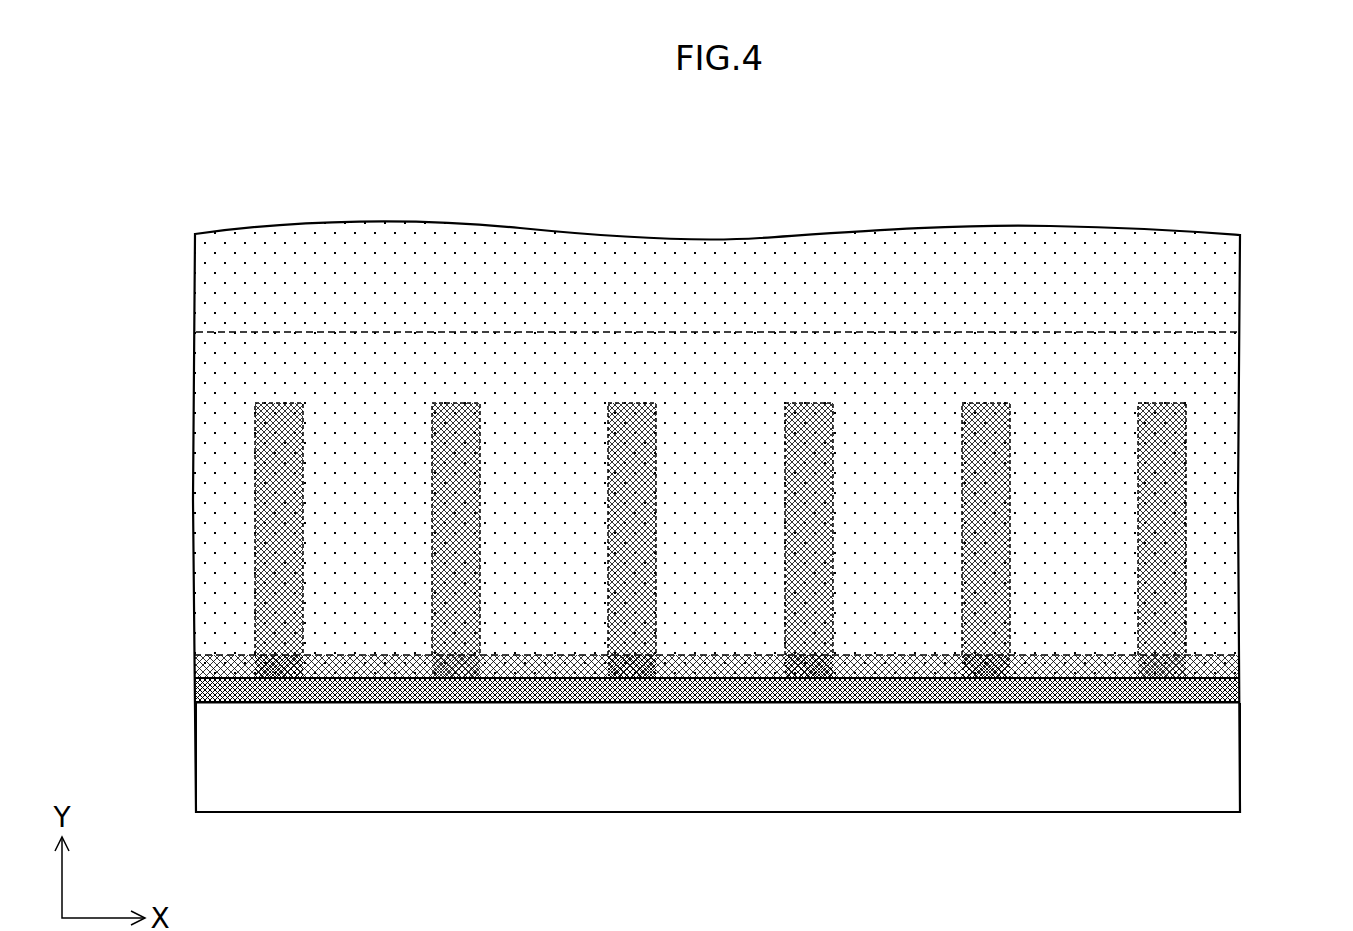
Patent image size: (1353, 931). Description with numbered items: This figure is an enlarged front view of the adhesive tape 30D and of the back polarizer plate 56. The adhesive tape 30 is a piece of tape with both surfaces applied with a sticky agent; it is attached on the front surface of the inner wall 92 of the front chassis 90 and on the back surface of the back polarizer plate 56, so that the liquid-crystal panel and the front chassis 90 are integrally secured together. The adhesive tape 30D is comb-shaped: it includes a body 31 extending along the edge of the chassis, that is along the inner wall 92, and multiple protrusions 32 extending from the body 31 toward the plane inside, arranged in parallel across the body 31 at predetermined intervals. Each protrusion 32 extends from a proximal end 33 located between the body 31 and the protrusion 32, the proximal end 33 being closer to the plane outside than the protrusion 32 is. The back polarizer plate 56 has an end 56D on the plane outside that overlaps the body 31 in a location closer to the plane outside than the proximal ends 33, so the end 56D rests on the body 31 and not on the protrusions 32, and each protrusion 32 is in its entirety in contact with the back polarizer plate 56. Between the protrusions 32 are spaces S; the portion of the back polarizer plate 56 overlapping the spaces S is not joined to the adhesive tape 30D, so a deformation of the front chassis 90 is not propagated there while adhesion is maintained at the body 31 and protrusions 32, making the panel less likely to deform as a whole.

The back polarizer plate 56 is at (1195, 284).
The end of the back polarizer plate 56D is at (1121, 680).
The protrusions 32 is at (629, 405).
The spaces S is at (720, 490).
The proximal ends 33 is at (635, 645).
The adhesive tape 30D is at (1196, 697).
The adhesive tape 30 is at (772, 710).
The body 31 is at (530, 703).
The inner wall 92 is at (1196, 775).
The front chassis 90 is at (773, 765).